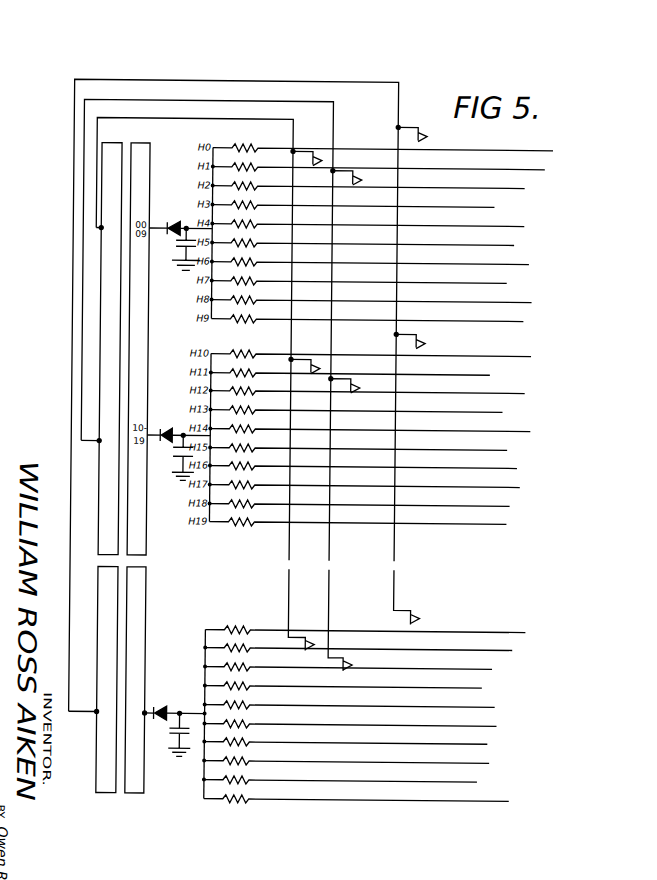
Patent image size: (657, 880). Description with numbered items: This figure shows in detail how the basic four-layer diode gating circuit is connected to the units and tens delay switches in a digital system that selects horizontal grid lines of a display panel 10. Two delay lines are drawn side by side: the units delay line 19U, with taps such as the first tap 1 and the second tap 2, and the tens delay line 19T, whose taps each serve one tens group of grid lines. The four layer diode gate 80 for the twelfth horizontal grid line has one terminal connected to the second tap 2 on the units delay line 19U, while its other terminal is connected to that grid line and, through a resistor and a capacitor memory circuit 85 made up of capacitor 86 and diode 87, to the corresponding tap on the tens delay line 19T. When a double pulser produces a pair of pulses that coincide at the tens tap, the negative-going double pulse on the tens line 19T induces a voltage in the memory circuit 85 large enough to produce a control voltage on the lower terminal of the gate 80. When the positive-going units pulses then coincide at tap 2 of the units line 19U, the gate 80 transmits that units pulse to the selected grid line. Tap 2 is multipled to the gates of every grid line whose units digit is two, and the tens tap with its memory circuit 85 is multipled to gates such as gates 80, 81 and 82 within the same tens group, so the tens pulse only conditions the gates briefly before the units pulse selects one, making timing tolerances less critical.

The first tap on units delay line 1 is at (105, 228).
The second tap on units delay line 2 is at (96, 441).
The display panel 10 is at (91, 713).
The tens delay line 19T is at (147, 185).
The units delay line 19U is at (103, 279).
The four layer diode gate 80 is at (352, 384).
The four layer diode gate 81 is at (314, 361).
The four layer diode gate 82 is at (419, 343).
The capacitor memory circuit 85 is at (168, 474).
The capacitor 86 is at (183, 477).
The diode 87 is at (167, 430).